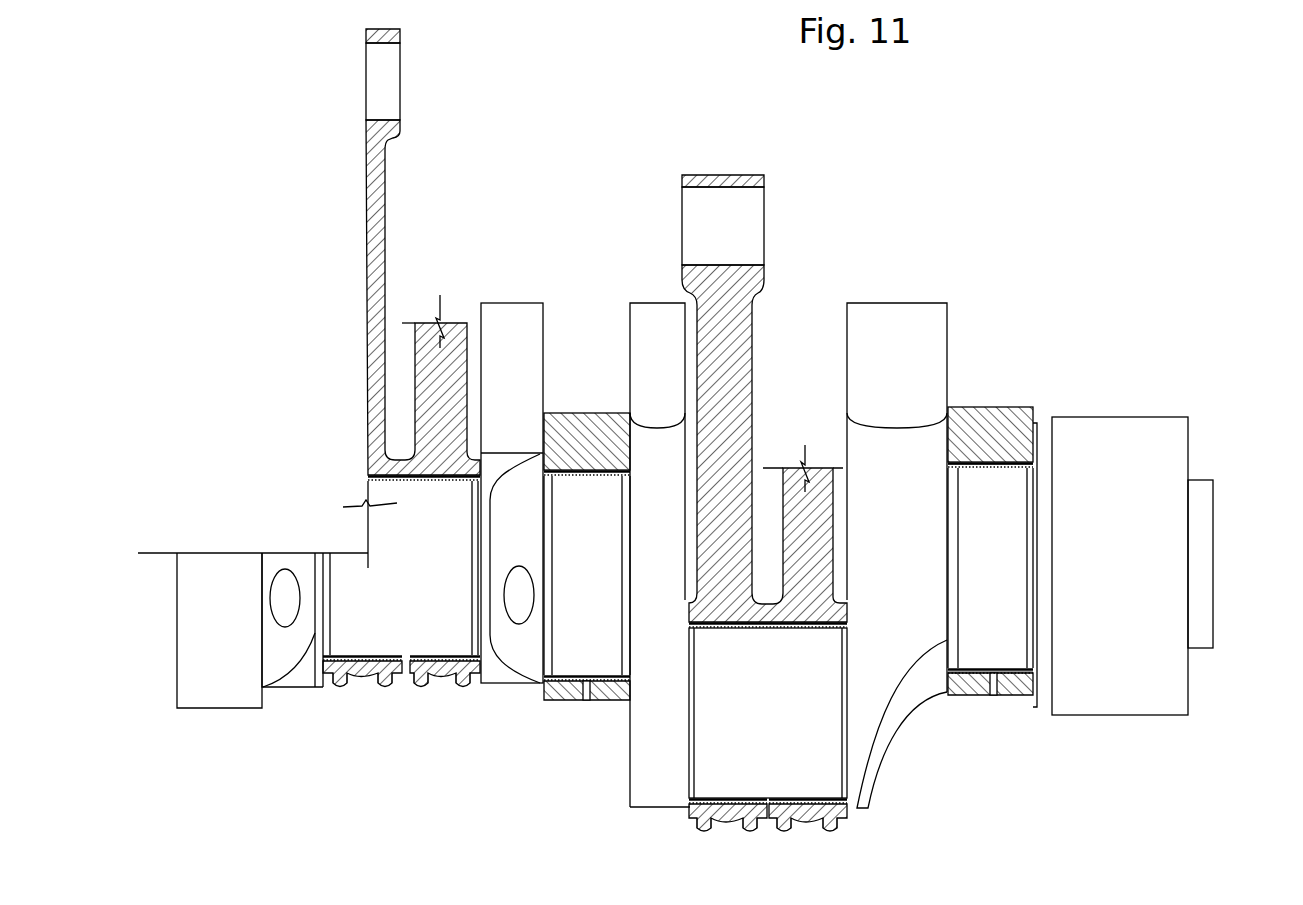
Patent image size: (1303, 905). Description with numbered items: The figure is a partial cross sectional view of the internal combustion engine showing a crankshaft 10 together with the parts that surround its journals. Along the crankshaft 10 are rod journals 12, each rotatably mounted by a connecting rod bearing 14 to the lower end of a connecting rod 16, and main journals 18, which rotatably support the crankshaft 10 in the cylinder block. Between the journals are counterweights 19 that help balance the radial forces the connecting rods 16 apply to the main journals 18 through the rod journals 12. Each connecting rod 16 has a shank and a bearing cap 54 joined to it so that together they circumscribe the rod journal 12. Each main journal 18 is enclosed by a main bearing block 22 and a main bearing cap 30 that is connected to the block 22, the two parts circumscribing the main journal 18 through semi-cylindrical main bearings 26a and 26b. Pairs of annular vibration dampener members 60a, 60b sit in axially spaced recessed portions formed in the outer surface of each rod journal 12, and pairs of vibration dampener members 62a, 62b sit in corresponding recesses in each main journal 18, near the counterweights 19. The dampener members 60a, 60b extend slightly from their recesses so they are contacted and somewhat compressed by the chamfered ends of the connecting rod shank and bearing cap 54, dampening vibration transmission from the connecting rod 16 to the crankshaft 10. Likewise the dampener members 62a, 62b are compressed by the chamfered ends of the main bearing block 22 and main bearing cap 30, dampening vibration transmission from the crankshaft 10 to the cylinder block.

The crankshaft 10 is at (1215, 498).
The rod journal 12 is at (391, 584).
The connecting rod bearing 14 is at (418, 484).
The connecting rod 16 is at (385, 167).
The main journal 18 is at (572, 584).
The counterweight 19 is at (292, 690).
The main bearing block 22 is at (1033, 418).
The semi-cylindrical main bearing 26a is at (985, 472).
The semi-cylindrical main bearing 26b is at (1020, 670).
The main bearing cap 30 is at (565, 702).
The bearing cap 54 is at (357, 678).
The vibration dampener member 60a is at (330, 654).
The vibration dampener member 60b is at (470, 482).
The vibration dampener member 62a is at (553, 478).
The vibration dampener member 62b is at (622, 672).